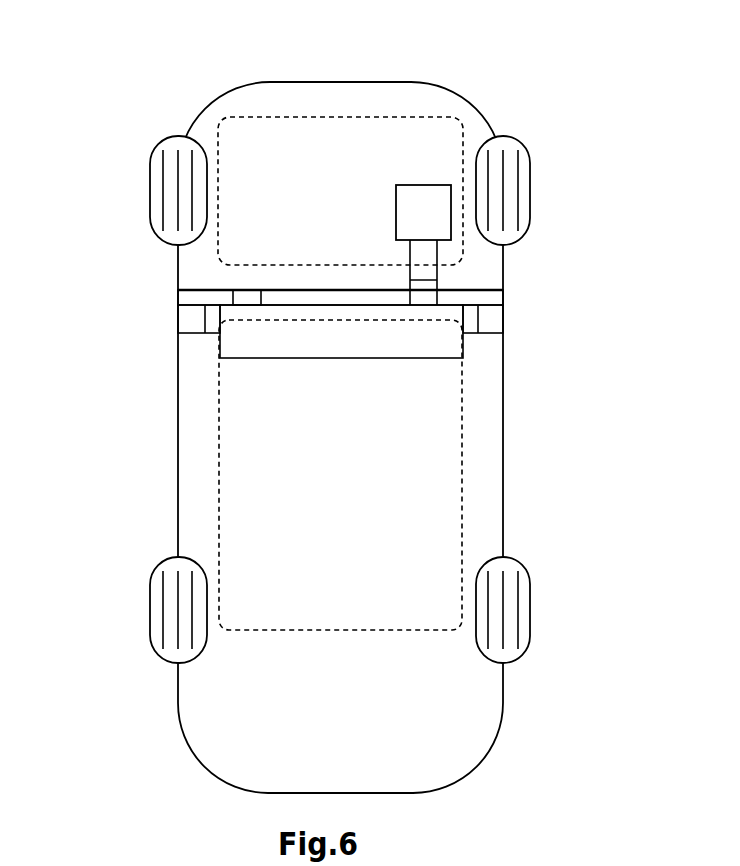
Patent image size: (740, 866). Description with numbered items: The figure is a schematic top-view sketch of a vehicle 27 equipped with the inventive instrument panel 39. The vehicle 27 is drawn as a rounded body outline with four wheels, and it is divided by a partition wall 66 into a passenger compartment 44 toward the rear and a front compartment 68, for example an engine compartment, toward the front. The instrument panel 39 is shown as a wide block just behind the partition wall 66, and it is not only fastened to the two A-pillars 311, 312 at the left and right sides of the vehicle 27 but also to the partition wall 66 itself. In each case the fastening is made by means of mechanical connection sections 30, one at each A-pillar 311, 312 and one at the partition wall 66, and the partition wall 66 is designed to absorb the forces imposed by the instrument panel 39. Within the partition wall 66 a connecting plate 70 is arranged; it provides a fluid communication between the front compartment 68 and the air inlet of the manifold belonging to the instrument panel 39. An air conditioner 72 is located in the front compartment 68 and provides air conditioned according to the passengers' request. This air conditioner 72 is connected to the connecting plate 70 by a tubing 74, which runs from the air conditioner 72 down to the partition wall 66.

The vehicle 27 is at (346, 404).
The mechanical connection sections 30 is at (247, 298).
The A-pillar 311 is at (178, 318).
The A-pillar 312 is at (497, 323).
The instrument panel 39 is at (285, 362).
The passenger compartment 44 is at (442, 555).
The partition wall 66 is at (493, 290).
The front compartment 68 is at (442, 157).
The connecting plate 70 is at (423, 293).
The air conditioner 72 is at (396, 203).
The tubing 74 is at (410, 260).